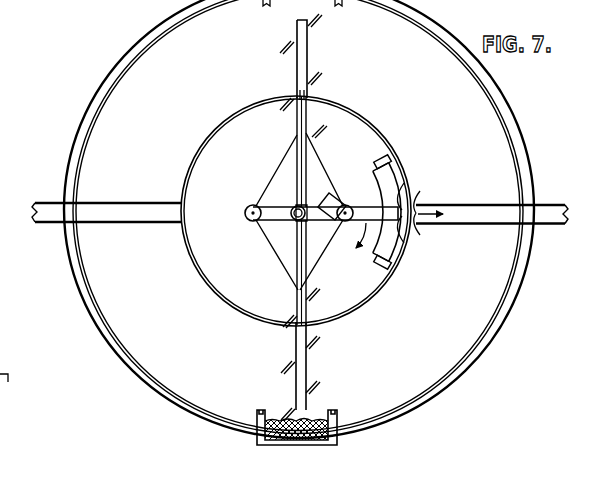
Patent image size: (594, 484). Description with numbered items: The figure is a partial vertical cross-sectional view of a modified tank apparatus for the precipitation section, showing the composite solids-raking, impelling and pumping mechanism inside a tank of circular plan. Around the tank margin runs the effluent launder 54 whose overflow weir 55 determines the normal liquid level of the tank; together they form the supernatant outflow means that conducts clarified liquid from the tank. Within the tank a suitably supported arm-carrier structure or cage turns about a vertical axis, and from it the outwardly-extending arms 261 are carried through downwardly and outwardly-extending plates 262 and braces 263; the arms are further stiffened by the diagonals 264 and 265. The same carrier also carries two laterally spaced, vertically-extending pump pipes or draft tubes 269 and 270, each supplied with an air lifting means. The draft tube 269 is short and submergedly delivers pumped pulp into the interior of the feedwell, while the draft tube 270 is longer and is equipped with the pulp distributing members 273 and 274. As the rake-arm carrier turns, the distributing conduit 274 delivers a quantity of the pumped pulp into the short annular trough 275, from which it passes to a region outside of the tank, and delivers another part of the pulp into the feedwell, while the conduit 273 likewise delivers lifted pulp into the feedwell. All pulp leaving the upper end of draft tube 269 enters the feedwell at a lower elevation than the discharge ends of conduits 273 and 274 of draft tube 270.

The marginal tank launder 54 is at (103, 104).
The overflow weir edge 55 is at (129, 72).
The outwardly-extending arms 261 is at (308, 61).
The downwardly and outwardly-extending plates 262 is at (276, 221).
The braces 263 is at (306, 149).
The diagonals 264 is at (300, 141).
The diagonals 265 is at (279, 262).
The draft tube 269 is at (246, 209).
The draft tube 270 is at (348, 206).
The pulp distributing member 273 is at (322, 196).
The distributing conduit 274 is at (392, 196).
The short annular trough 275 is at (402, 254).